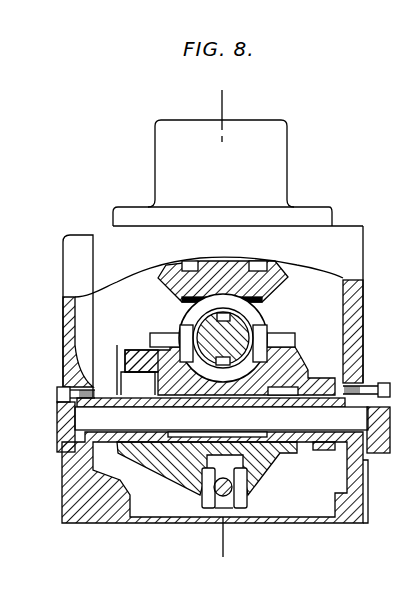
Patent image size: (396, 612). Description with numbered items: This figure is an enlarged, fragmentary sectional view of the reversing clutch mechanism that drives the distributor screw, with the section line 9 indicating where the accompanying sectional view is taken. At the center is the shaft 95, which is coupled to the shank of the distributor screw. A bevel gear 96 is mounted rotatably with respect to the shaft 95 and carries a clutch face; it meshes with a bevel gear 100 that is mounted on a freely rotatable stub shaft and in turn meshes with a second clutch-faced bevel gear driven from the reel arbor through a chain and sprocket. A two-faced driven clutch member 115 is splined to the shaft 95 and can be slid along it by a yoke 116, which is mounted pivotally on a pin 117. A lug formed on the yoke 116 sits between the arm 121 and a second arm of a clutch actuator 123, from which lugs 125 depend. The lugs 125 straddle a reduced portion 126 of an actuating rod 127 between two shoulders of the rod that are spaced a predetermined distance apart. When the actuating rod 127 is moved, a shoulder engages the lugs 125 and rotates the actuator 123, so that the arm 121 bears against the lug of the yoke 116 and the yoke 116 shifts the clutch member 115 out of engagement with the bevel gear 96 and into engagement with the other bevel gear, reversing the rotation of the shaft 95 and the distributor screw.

The section line 9- 9 is at (216, 97).
The shaft 95 is at (235, 330).
The bevel gear 96 is at (163, 307).
The bevel gear 100 is at (273, 275).
The two-faced driven clutch member 115 is at (225, 317).
The yoke 116 is at (288, 368).
The pin 117 is at (90, 417).
The arm 121 is at (130, 378).
The clutch actuator 123 is at (130, 447).
The lugs 125 is at (205, 472).
The reduced portion 126 is at (223, 500).
The actuating rod 127 is at (218, 503).